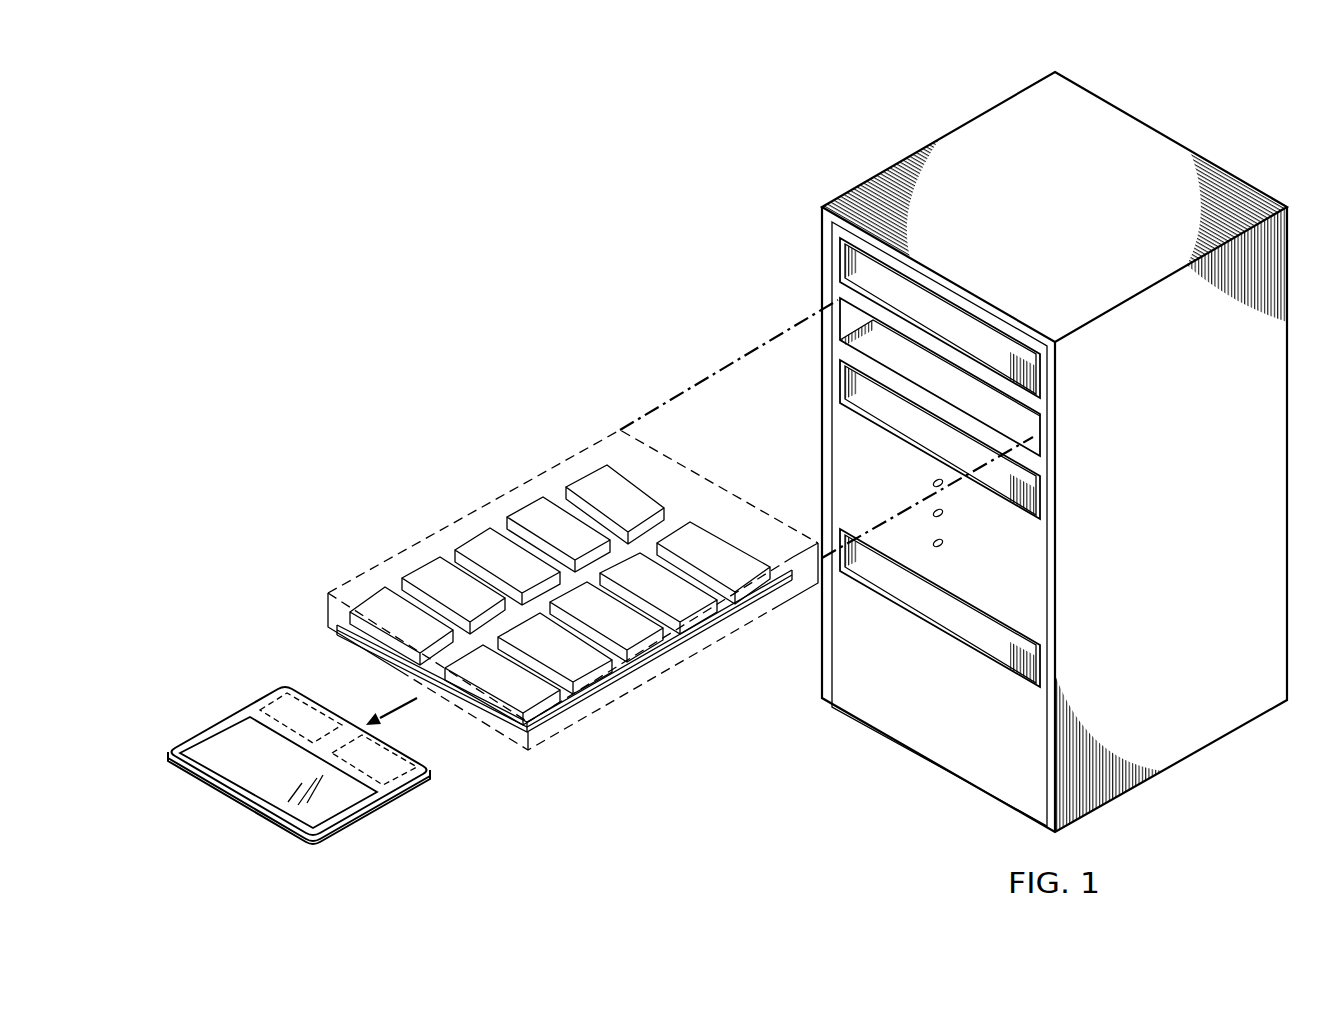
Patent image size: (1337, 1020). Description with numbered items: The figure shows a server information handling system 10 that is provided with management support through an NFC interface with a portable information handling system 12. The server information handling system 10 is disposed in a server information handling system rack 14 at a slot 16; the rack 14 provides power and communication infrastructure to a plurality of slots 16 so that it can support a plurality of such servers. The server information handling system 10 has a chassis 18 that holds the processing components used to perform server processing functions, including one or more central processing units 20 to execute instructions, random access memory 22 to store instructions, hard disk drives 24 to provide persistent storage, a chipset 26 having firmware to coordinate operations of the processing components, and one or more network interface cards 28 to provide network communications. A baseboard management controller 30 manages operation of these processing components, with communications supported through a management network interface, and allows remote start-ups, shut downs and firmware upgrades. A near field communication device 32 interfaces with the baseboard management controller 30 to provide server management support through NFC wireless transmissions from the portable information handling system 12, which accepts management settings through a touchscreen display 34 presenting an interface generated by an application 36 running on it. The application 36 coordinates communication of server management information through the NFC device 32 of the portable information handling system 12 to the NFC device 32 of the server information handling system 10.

The server information handling system 10 is at (335, 291).
The portable information handling system 12 is at (200, 725).
The server information handling system rack 14 is at (1219, 157).
The slot 16 is at (1023, 419).
The chassis 18 is at (549, 458).
The central processing unit 20 is at (480, 543).
The random access memory 22 is at (650, 645).
The hard disk drive 24 is at (532, 512).
The chipset 26 is at (603, 684).
The network interface card 28 is at (590, 480).
The baseboard management controller 30 is at (549, 720).
The near field communication device 32 is at (370, 603).
The touchscreen display 34 is at (253, 782).
The application 36 is at (403, 780).